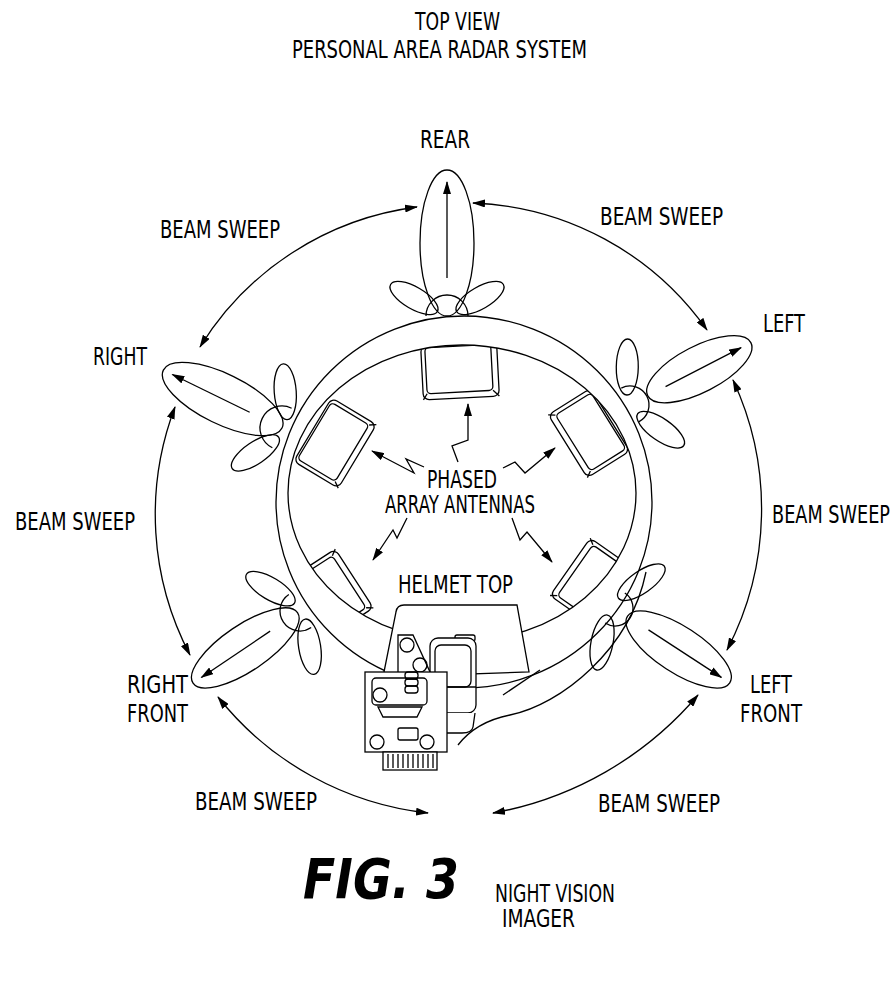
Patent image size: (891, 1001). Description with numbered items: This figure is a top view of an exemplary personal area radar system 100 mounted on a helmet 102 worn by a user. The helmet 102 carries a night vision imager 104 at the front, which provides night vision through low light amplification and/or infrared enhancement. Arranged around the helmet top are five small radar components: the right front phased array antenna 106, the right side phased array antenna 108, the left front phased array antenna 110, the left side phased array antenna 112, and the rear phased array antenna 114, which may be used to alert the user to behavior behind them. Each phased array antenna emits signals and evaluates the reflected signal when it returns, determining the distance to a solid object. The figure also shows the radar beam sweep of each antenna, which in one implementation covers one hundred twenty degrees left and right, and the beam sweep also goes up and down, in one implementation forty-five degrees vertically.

The personal area radar system 100 is at (622, 63).
The helmet 102 is at (520, 628).
The night vision imager 104 is at (426, 771).
The right front phased array antenna 106 is at (316, 562).
The right side phased array antenna 108 is at (354, 410).
The left front phased array antenna 110 is at (575, 618).
The left side phased array antenna 112 is at (606, 472).
The rear phased array antenna 114 is at (504, 370).